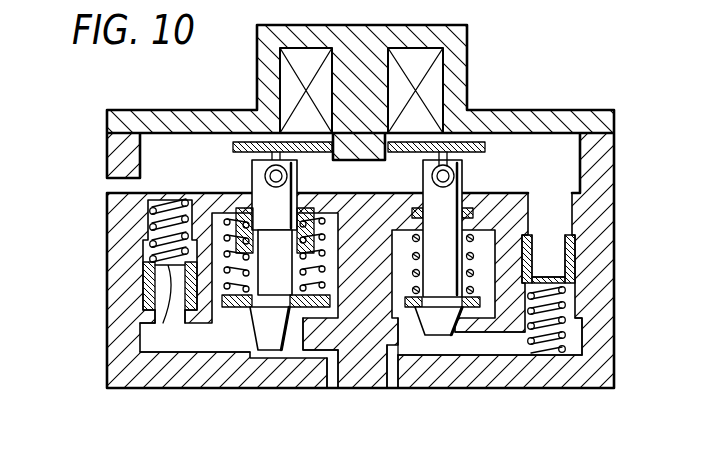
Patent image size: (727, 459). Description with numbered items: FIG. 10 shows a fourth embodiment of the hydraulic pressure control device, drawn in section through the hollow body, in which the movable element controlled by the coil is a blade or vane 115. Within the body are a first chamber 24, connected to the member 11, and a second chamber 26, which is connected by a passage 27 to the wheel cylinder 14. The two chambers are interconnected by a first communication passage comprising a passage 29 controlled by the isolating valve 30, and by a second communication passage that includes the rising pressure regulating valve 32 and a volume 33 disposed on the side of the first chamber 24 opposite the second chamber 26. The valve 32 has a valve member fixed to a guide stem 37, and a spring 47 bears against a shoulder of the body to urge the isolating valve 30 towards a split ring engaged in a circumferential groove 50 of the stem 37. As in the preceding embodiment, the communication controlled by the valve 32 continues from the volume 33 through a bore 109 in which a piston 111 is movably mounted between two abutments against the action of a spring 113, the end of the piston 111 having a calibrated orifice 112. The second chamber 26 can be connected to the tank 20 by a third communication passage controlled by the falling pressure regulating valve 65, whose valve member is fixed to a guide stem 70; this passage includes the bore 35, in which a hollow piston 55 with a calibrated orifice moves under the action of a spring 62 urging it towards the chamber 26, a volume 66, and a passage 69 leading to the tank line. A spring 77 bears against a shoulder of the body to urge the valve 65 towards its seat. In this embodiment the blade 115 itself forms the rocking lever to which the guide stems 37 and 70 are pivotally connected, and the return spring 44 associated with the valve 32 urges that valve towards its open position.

The wheel cylinder 14 is at (98, 185).
The second chamber 26 is at (178, 143).
The blade or vane 115 is at (478, 134).
The passage 29 is at (299, 198).
The isolating valve 30 is at (240, 228).
The guide stem 37 is at (280, 265).
The spring 44 is at (317, 222).
The spring 47 is at (306, 266).
The rising pressure regulating valve 32 is at (264, 354).
The passage 27 is at (336, 353).
The first chamber 24 is at (218, 306).
The volume 33 is at (230, 343).
The spring 113 is at (154, 210).
The piston 111 is at (136, 268).
The bore 109 is at (149, 288).
The calibrated orifice 112 is at (168, 283).
The member 11 is at (333, 396).
The tank 20 is at (392, 392).
The guide stem 70 is at (447, 265).
The spring 77 is at (405, 269).
The falling pressure regulating valve 65 is at (452, 347).
The passage 69 is at (395, 376).
The volume 66 is at (502, 347).
The bore 35 is at (577, 247).
The piston 55 is at (585, 273).
The circumferential groove 50 is at (549, 301).
The spring 62 is at (552, 330).